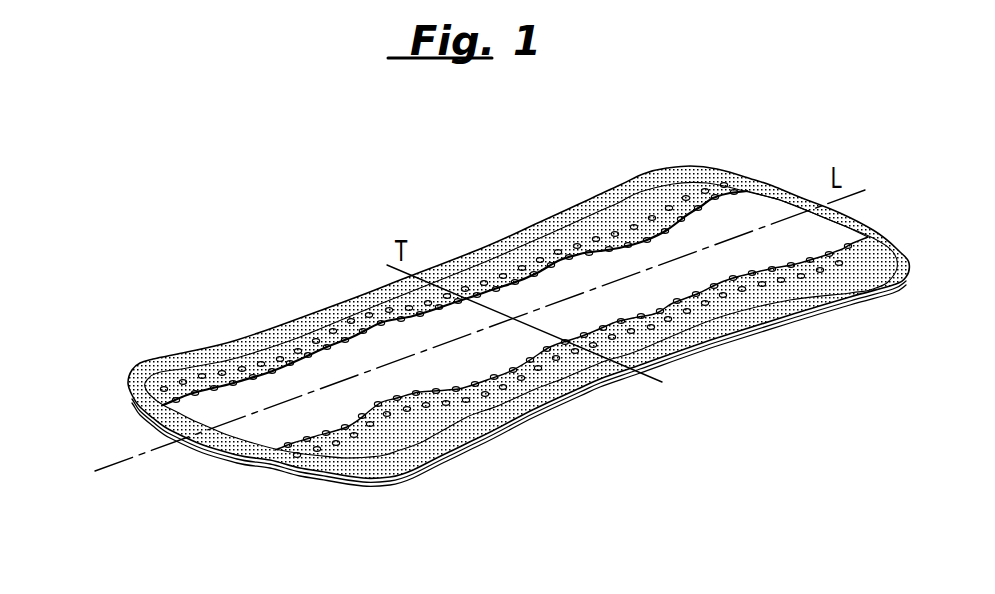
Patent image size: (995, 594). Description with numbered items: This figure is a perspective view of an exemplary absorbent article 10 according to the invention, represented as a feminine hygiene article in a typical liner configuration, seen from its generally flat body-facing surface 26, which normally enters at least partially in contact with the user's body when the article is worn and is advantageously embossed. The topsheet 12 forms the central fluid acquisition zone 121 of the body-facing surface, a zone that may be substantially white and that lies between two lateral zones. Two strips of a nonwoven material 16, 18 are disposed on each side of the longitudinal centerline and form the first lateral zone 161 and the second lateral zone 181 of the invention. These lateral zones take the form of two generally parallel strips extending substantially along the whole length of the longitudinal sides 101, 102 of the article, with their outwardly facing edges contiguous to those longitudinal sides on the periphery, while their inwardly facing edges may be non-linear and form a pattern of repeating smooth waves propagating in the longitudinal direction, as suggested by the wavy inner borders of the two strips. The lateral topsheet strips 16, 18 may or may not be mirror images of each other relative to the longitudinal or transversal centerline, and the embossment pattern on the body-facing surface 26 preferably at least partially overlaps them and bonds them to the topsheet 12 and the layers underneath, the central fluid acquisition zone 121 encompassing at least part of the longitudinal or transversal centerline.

The absorbent article 10 is at (650, 428).
The topsheet 12 is at (266, 428).
The nonwoven material strip 16 is at (220, 362).
The nonwoven material strip 18 is at (383, 445).
The body-facing surface 26 is at (291, 283).
The longitudinal side 101 is at (535, 227).
The longitudinal side 102 is at (767, 322).
The central fluid acquisition zone 121 is at (757, 254).
The first lateral zone 161 is at (603, 222).
The second lateral zone 181 is at (788, 311).